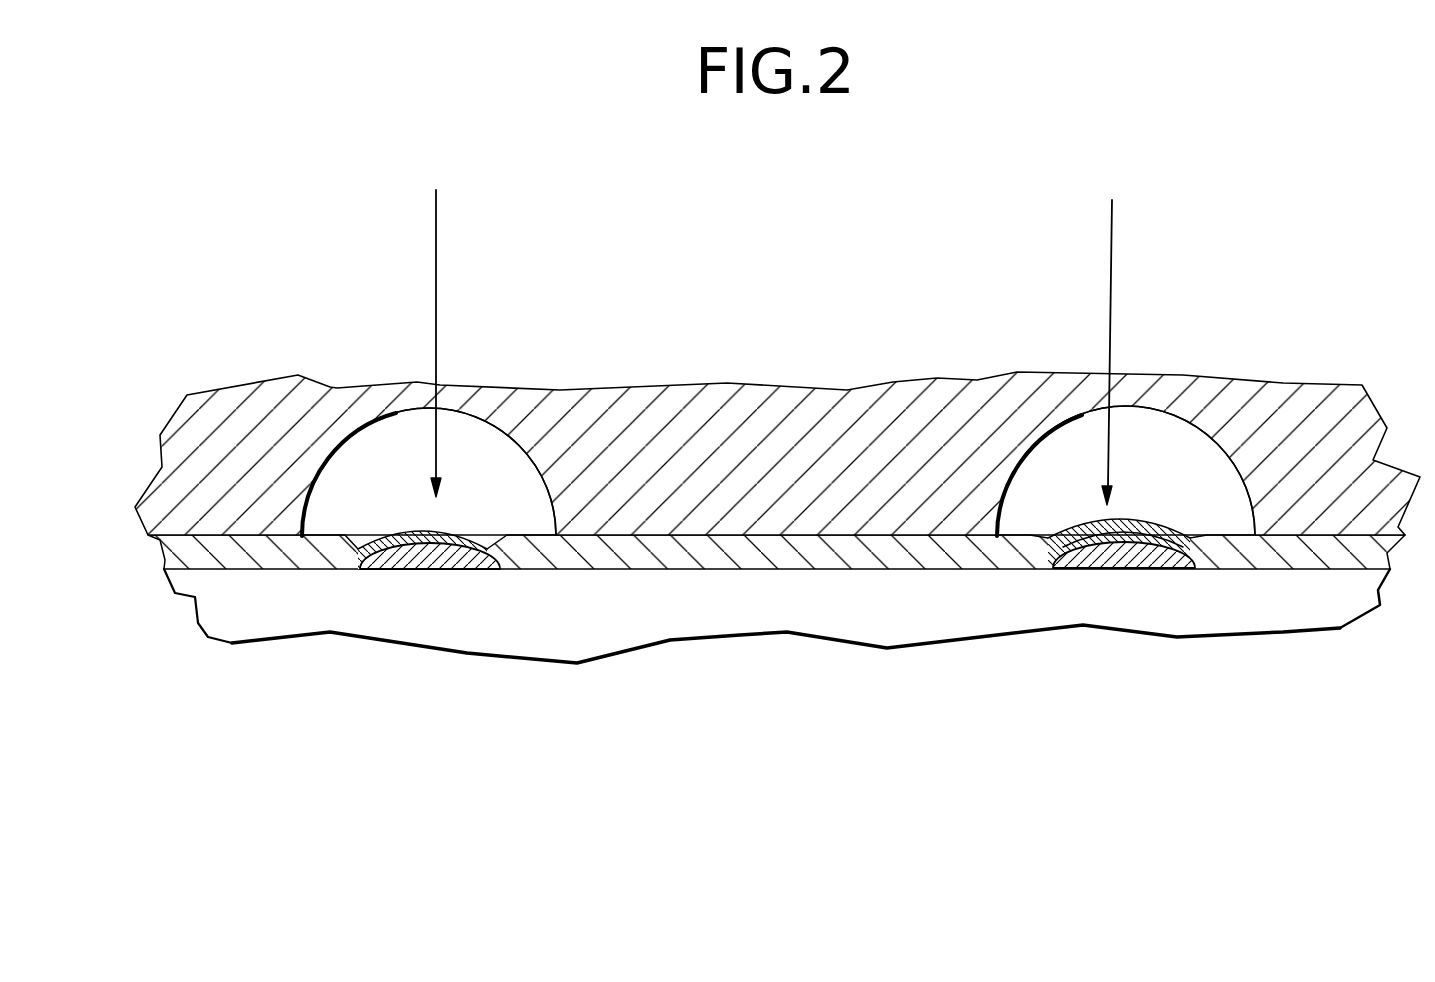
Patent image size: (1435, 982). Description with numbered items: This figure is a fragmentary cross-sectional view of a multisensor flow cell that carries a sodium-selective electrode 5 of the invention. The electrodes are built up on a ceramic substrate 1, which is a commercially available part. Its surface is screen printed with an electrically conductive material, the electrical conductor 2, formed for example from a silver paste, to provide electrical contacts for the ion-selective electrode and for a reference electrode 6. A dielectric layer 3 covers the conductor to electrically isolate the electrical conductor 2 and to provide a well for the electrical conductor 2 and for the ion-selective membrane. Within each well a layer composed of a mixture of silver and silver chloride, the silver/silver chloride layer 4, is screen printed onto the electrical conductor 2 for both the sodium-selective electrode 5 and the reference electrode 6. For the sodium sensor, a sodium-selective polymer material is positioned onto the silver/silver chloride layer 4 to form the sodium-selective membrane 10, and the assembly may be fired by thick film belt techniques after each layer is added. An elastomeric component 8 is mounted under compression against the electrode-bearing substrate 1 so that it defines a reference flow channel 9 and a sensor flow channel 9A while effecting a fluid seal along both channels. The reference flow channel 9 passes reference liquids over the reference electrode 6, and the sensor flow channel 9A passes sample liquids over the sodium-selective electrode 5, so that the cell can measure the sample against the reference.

The ceramic substrate 1 is at (258, 603).
The electrical conductor 2 is at (425, 567).
The dielectric layer 3 is at (778, 550).
The silver/silver chloride layer 4 is at (425, 530).
The sodium-selective electrode 5 is at (1112, 200).
The reference electrode 6 is at (436, 190).
The elastomeric component 8 is at (772, 410).
The reference flow channel 9 is at (377, 492).
The sensor flow channel 9A is at (1180, 483).
The sodium-selective membrane 10 is at (1090, 527).